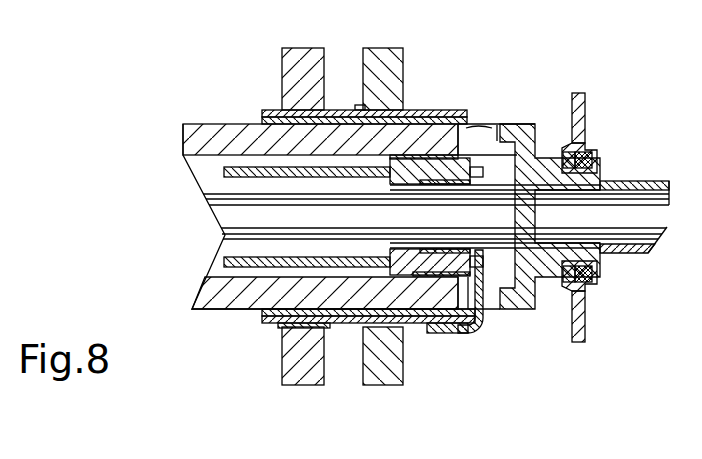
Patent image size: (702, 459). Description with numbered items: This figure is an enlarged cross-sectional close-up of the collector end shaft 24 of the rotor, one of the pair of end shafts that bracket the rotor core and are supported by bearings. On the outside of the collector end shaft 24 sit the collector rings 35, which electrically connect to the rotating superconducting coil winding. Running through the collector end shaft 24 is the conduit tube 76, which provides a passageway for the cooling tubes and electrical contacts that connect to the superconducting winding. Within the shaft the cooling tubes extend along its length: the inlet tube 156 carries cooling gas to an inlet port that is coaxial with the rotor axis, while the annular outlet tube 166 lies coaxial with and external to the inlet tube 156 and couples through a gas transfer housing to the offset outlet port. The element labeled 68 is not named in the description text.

The collector rings 35 is at (293, 67).
The collector end shaft 24 is at (218, 134).
The conduit tube 76 is at (187, 152).
The lower housing liner 68 is at (227, 236).
The outlet tube 166 is at (615, 207).
The inlet tube 156 is at (643, 217).